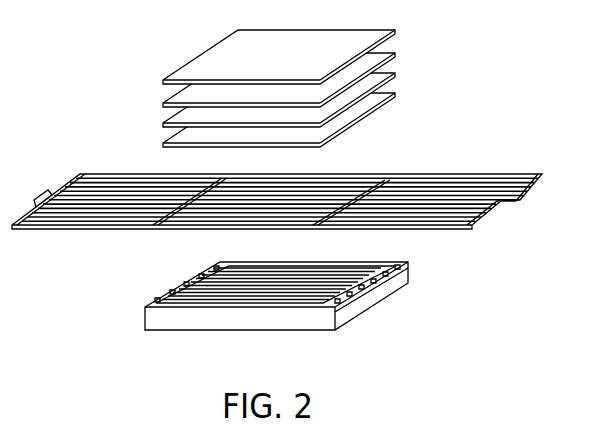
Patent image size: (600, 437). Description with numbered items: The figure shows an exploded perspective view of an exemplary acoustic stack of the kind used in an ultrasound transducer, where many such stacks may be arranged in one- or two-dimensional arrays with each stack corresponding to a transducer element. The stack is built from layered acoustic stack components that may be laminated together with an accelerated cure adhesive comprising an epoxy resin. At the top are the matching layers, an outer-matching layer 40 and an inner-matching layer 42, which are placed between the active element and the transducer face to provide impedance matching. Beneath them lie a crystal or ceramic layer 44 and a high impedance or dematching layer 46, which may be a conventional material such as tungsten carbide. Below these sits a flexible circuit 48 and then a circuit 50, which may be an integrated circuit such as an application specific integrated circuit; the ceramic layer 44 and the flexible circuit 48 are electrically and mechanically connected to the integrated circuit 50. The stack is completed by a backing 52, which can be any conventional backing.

The outer-matching layer 40 is at (156, 50).
The inner-matching layer 42 is at (157, 87).
The crystal or ceramic layer 44 is at (157, 109).
The dematching layer 46 is at (157, 133).
The flexible circuit 48 is at (178, 237).
The circuit 50 is at (245, 321).
The backing 52 is at (178, 343).